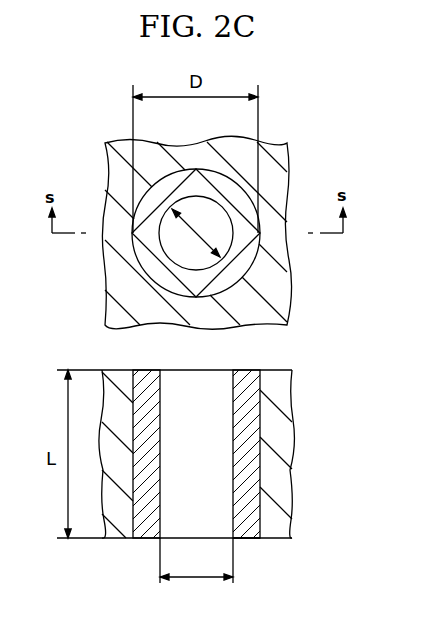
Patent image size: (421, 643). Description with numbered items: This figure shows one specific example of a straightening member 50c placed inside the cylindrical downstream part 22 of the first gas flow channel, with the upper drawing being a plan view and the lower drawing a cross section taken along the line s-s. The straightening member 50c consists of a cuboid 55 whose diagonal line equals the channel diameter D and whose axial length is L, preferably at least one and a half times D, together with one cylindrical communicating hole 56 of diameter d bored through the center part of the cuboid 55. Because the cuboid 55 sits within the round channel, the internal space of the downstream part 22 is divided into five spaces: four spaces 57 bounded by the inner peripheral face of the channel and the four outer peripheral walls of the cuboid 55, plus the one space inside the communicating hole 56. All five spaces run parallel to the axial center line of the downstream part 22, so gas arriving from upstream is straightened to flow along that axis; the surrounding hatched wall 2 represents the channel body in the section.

The straightening member 50c is at (297, 107).
The spaces 57 is at (240, 203).
The cuboid 55 is at (166, 261).
The cylindrical communicating hole 56 is at (226, 236).
The base block 2 is at (281, 446).
The downstream part of the first gas flow channel 22 is at (254, 539).